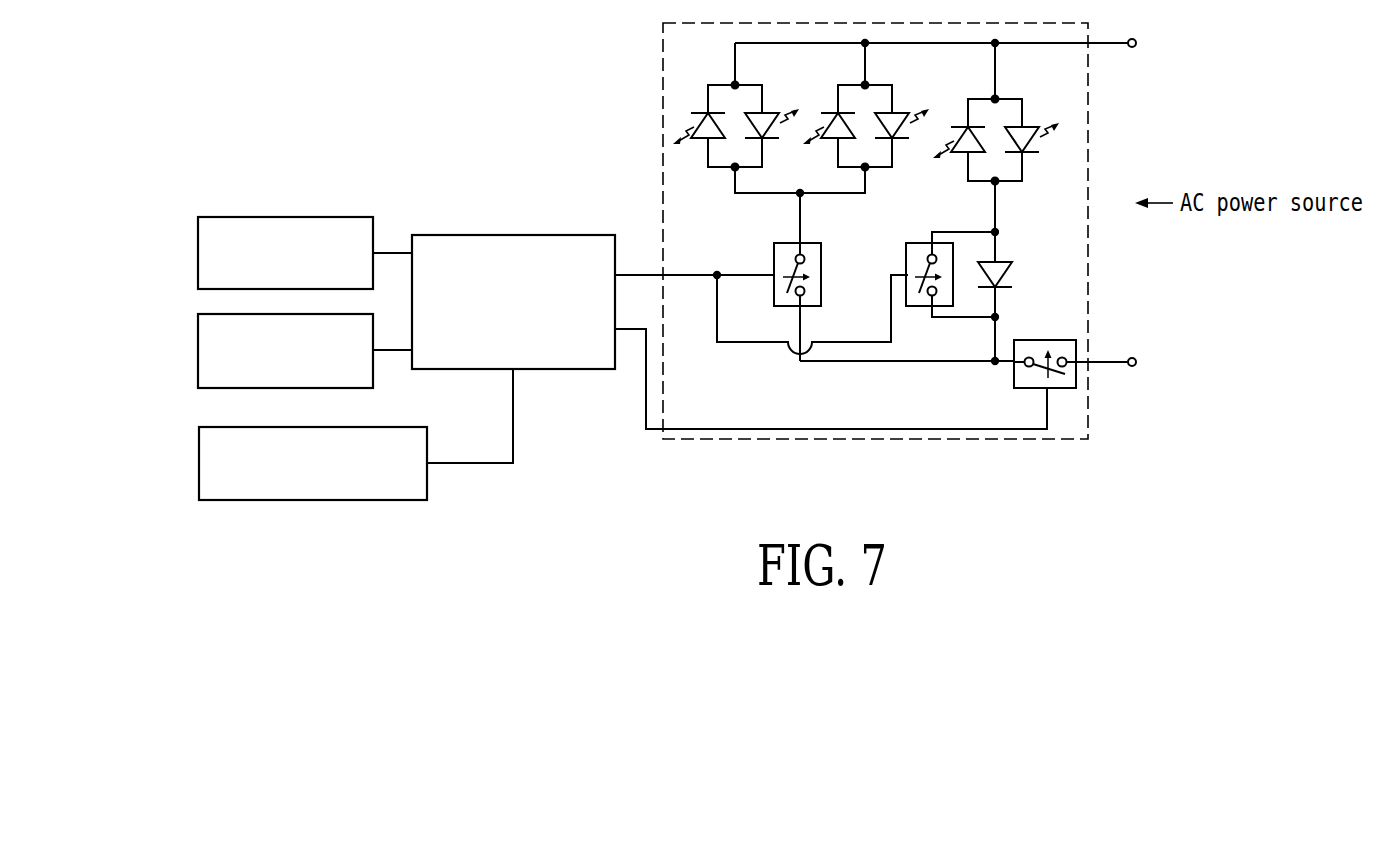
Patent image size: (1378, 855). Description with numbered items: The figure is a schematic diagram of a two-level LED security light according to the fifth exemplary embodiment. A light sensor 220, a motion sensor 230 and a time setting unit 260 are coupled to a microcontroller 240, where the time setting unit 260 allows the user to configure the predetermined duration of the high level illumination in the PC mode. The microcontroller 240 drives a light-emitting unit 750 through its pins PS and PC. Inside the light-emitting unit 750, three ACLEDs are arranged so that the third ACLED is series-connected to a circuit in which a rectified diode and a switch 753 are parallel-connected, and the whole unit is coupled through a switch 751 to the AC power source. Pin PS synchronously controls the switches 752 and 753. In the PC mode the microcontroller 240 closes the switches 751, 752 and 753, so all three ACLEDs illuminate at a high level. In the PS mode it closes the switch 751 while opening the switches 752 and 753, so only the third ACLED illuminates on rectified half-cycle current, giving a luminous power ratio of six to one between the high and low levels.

The light sensor 220 is at (198, 251).
The motion sensor 230 is at (198, 348).
The microcontroller 240 is at (514, 235).
The time setting unit 260 is at (199, 461).
The light-emitting unit 750 is at (860, 231).
The switch 751 is at (1014, 378).
The switch 752 is at (774, 260).
The switch 753 is at (908, 260).